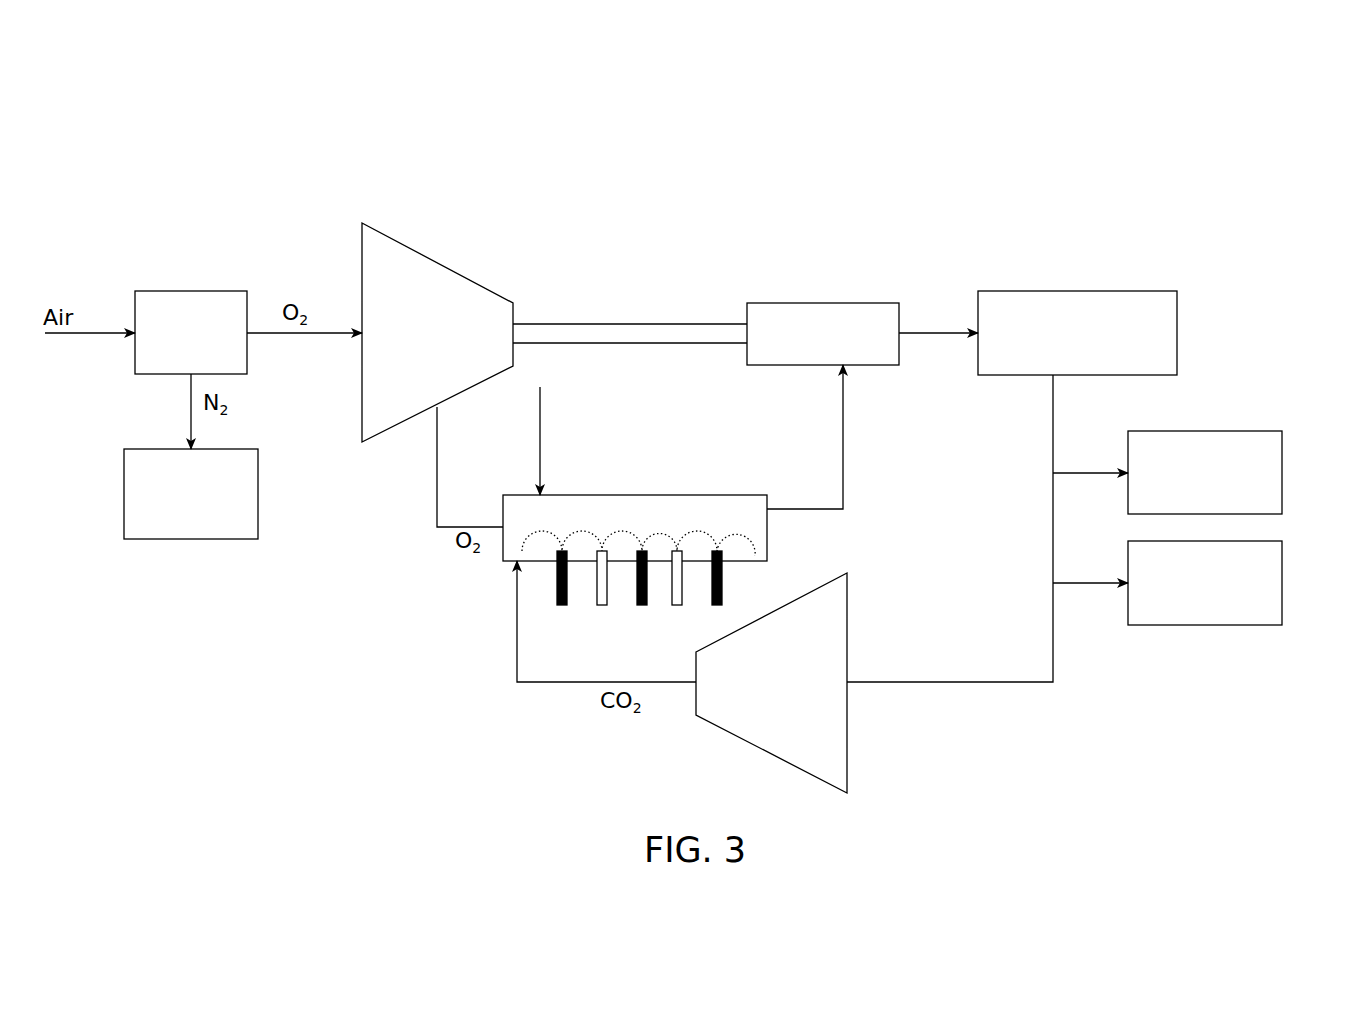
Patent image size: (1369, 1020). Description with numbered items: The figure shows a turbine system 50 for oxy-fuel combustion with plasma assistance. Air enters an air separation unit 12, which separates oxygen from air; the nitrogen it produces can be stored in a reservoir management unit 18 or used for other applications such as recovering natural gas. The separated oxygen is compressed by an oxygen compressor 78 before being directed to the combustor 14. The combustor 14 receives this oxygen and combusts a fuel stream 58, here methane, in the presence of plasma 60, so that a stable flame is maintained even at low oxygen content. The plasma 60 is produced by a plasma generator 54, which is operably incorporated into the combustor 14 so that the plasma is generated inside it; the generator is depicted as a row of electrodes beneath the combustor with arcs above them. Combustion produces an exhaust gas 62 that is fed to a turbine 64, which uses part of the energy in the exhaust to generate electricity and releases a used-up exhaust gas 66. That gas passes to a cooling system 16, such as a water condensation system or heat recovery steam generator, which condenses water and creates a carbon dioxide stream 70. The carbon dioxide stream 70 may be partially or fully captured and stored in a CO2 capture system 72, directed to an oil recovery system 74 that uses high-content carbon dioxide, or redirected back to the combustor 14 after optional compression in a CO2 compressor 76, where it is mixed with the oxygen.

The air separation unit 12 is at (192, 291).
The reservoir management unit 18 is at (259, 493).
The oxygen compressor 78 is at (420, 250).
The fuel stream 58 is at (543, 436).
The combustor 14 is at (685, 495).
The plasma 60 is at (643, 543).
The plasma generator 54 is at (645, 598).
The turbine 64 is at (825, 303).
The used-up exhaust gas 66 is at (940, 341).
The exhaust gas 62 is at (845, 485).
The cooling system 16 is at (1178, 330).
The carbon dioxide stream 70 is at (1055, 418).
The CO2 capture system 72 is at (1283, 470).
The oil recovery system 74 is at (1283, 581).
The CO2 compressor 76 is at (848, 633).
The system 50 is at (1220, 175).